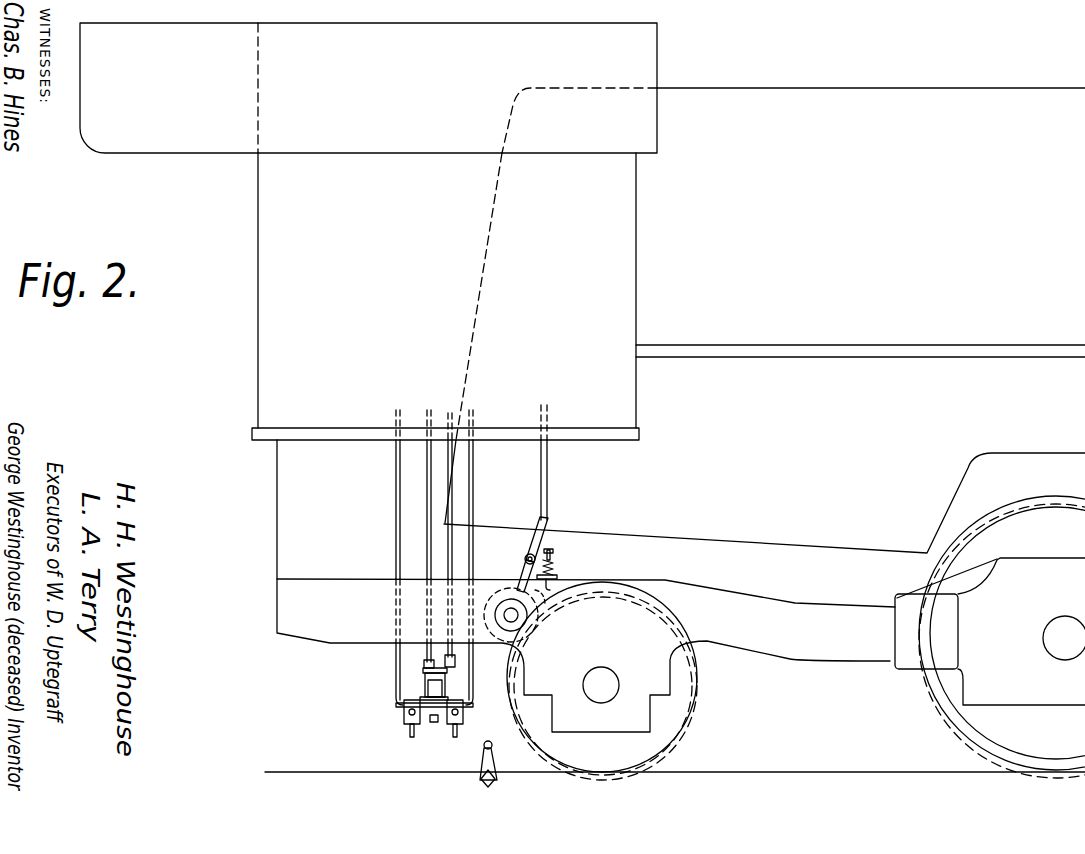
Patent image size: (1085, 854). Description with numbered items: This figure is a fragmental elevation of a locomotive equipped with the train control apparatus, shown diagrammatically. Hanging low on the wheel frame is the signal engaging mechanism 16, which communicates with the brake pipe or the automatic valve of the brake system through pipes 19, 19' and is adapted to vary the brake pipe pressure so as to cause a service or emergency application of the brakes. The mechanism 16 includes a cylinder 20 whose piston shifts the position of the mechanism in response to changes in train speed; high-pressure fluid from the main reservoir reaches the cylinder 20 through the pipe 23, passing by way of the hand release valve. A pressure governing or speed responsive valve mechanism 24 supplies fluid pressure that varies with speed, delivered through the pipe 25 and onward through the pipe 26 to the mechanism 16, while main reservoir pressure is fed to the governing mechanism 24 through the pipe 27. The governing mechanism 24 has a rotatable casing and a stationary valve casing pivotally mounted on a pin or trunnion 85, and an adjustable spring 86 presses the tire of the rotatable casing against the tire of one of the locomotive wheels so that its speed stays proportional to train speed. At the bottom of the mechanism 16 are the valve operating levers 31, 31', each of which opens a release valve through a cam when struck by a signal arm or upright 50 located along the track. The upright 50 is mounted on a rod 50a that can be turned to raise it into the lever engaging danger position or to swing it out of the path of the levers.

The signal engaging mechanism 16 is at (425, 684).
The pipe 19 is at (483, 557).
The pipe 19' is at (365, 557).
The cylinder 20 is at (437, 688).
The pipe 23 is at (424, 662).
The pressure governing or speed responsive valve mechanism 24 is at (535, 625).
The pipe 25 is at (540, 525).
The pipe 26 is at (452, 545).
The pipe 27 is at (549, 525).
The lever 31 is at (472, 718).
The lever 31' is at (378, 721).
The signal arm or upright 50 is at (483, 747).
The rod 50a is at (483, 780).
The pin or trunnion 85 is at (525, 560).
The adjustable spring 86 is at (553, 572).